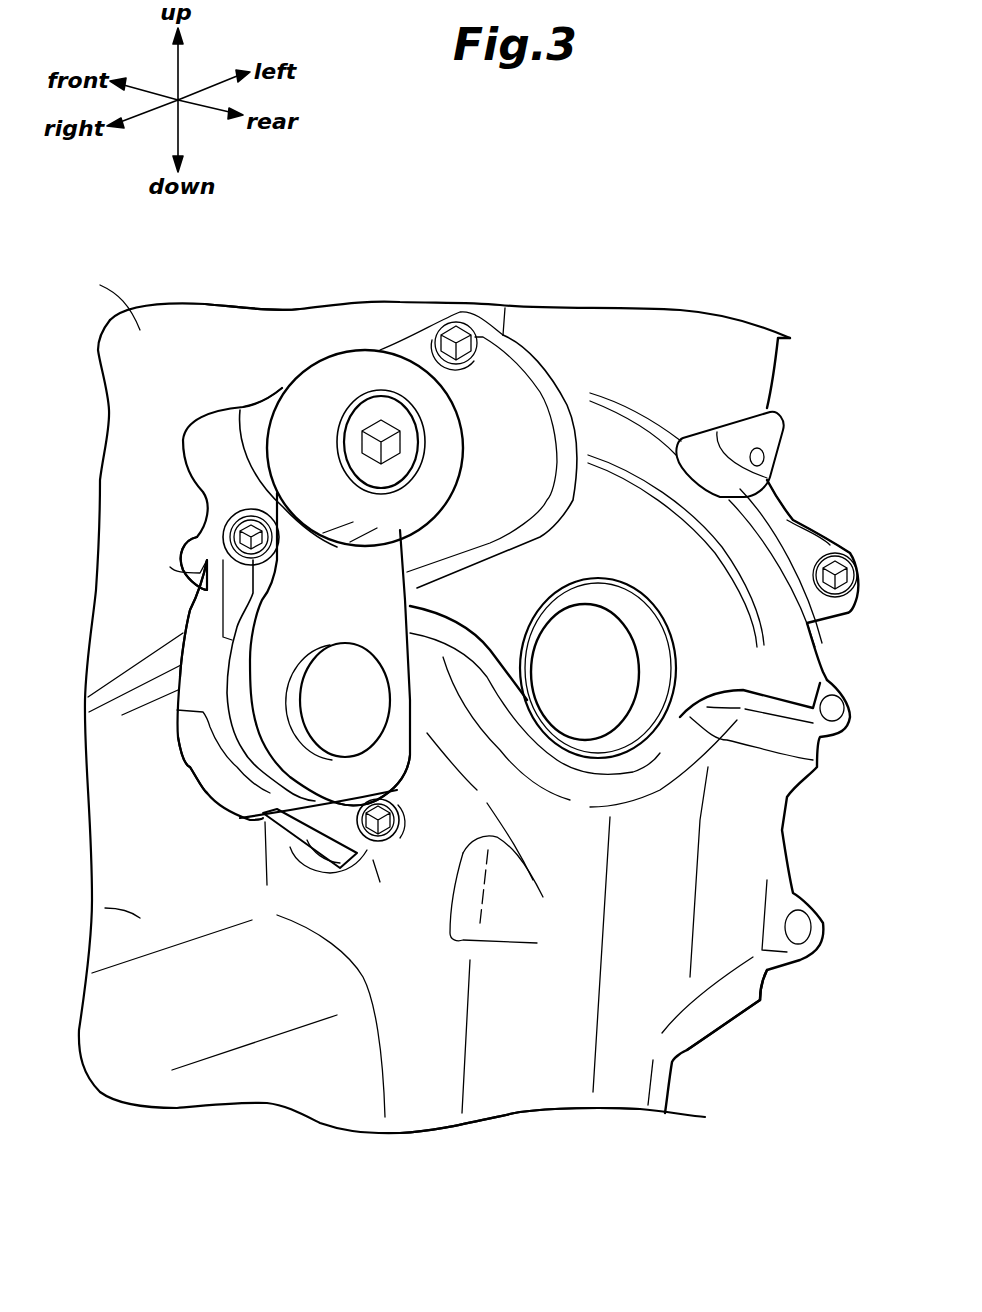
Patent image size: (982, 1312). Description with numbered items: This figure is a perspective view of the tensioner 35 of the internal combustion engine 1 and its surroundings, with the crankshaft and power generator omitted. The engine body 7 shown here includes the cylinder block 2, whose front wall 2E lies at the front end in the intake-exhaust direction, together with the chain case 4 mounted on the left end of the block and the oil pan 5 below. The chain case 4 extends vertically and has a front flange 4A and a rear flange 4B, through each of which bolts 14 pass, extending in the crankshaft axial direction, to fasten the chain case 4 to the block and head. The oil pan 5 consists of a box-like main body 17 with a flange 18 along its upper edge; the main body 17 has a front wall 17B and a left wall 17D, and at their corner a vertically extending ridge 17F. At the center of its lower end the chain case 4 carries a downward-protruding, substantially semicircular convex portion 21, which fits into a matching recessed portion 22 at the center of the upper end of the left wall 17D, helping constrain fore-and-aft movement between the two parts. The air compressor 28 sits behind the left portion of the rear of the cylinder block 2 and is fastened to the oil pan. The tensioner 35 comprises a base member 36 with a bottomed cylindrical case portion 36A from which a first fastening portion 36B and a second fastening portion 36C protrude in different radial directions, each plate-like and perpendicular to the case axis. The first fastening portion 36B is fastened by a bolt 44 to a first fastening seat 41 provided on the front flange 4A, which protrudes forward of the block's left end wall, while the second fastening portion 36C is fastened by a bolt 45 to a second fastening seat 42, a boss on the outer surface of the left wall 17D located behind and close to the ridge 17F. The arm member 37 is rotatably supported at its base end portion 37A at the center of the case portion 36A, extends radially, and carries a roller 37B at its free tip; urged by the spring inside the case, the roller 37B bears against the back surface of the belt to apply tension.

The internal combustion engine 1 is at (758, 274).
The cylinder block 2 is at (187, 317).
The front wall 2E is at (97, 299).
The chain case 4 is at (577, 325).
The front flange 4A is at (482, 312).
The rear flange 4B is at (787, 520).
The oil pan 5 is at (540, 1092).
The engine body 7 is at (764, 996).
The bolt 14 is at (447, 325).
The main body 17 is at (627, 1047).
The front wall 17B is at (105, 908).
The left wall 17D is at (418, 1100).
The ridge 17F is at (227, 880).
The flange 18 is at (122, 710).
The convex portion 21 is at (813, 760).
The recessed portion 22 is at (684, 722).
The air compressor 28 is at (263, 323).
The tensioner 35 is at (353, 332).
The base member 36 is at (202, 794).
The case portion 36A is at (190, 742).
The first fastening portion 36B is at (233, 580).
The second fastening portion 36C is at (360, 875).
The arm member 37 is at (280, 621).
The base end portion 37A is at (398, 777).
The roller 37B is at (313, 377).
The first fastening seat 41 is at (179, 547).
The second fastening seat 42 is at (325, 858).
The bolt 44 is at (228, 512).
The bolt 45 is at (394, 838).